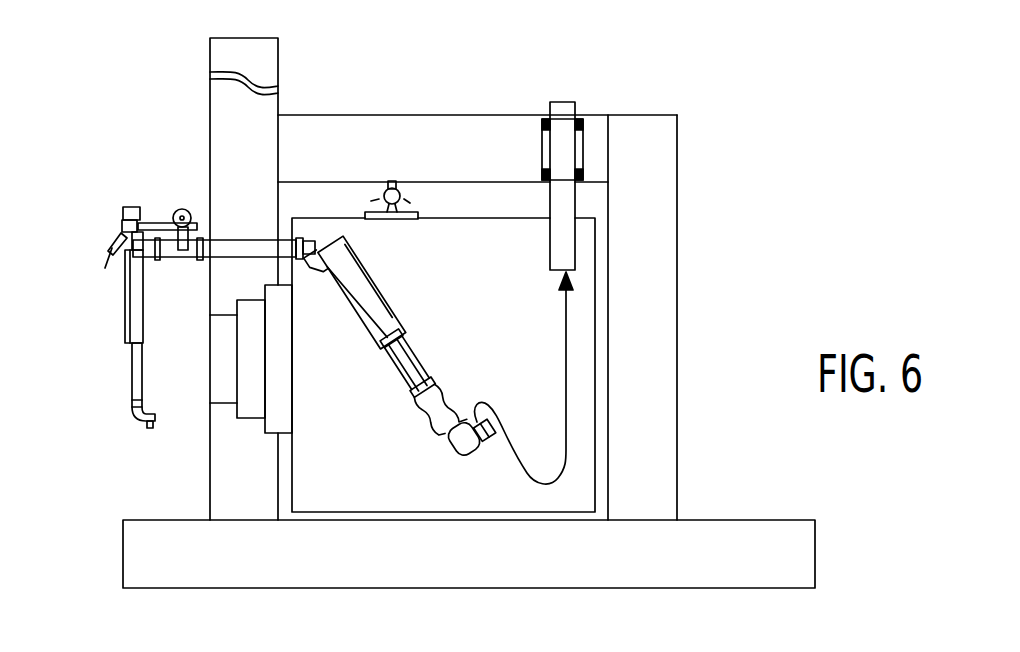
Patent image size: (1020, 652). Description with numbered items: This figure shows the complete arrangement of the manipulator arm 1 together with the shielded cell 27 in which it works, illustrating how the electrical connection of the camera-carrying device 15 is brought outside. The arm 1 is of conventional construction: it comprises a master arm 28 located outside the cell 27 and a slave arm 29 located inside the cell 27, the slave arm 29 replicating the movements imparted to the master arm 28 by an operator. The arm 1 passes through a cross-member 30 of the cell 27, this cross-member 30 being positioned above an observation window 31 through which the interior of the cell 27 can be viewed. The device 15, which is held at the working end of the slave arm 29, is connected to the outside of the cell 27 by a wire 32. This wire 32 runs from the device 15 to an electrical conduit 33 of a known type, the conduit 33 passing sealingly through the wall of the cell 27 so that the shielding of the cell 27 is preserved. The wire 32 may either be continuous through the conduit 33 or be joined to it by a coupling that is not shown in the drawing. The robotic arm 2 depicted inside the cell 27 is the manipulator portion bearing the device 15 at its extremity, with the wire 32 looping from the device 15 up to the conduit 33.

The arm 1 is at (74, 222).
The robot arm 2 is at (403, 362).
The device 15 is at (491, 440).
The shielded cell 27 is at (698, 250).
The master arm 28 is at (125, 350).
The slave arm 29 is at (405, 336).
The cross-member 30 is at (179, 188).
The observation window 31 is at (207, 365).
The wire 32 is at (572, 373).
The electrical conduit 33 is at (566, 100).